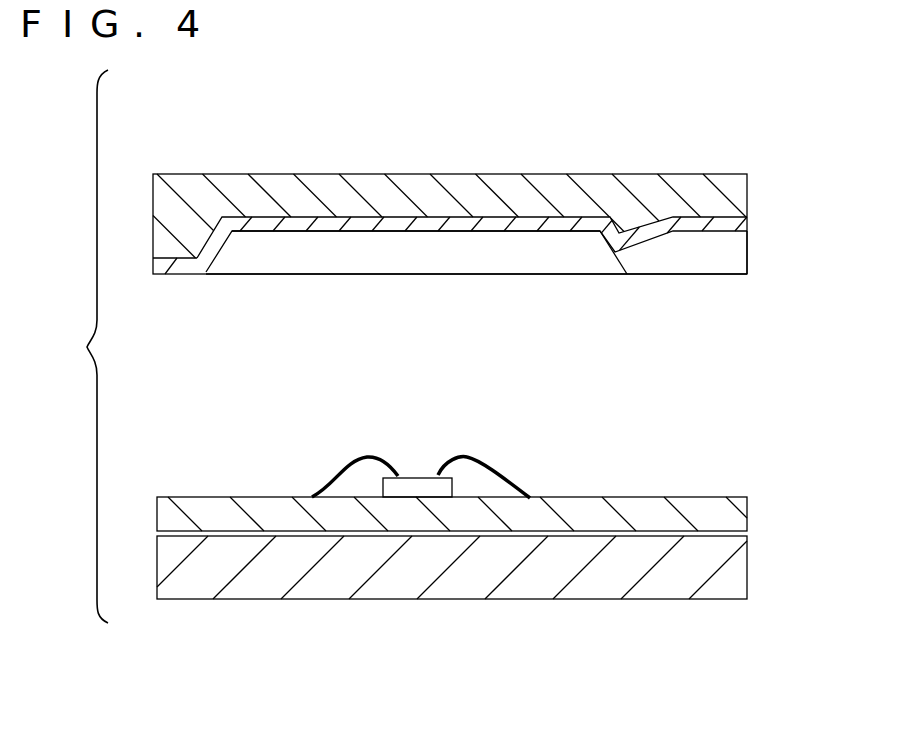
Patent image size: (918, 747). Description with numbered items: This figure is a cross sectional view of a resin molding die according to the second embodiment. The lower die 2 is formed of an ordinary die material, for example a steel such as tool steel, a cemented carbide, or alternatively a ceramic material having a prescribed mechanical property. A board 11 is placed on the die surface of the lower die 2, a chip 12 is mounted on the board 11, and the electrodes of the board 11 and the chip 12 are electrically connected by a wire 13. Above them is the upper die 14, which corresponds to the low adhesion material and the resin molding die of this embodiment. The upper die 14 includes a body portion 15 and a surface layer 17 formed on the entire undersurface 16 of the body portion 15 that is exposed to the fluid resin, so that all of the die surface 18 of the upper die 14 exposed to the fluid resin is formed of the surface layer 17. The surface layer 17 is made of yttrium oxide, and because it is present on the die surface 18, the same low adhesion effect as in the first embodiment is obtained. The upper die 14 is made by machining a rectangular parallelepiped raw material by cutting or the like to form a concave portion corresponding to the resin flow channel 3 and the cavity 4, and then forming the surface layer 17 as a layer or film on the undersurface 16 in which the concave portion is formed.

The lower die 2 is at (452, 553).
The resin flow channel 3 is at (682, 256).
The cavity 4 is at (533, 250).
The board 11 is at (698, 512).
The chip 12 is at (417, 488).
The wire 13 is at (337, 475).
The upper die 14 is at (471, 208).
The body portion 15 is at (287, 196).
The undersurface 16 is at (400, 221).
The surface layer 17 is at (360, 222).
The die surface 18 is at (451, 223).